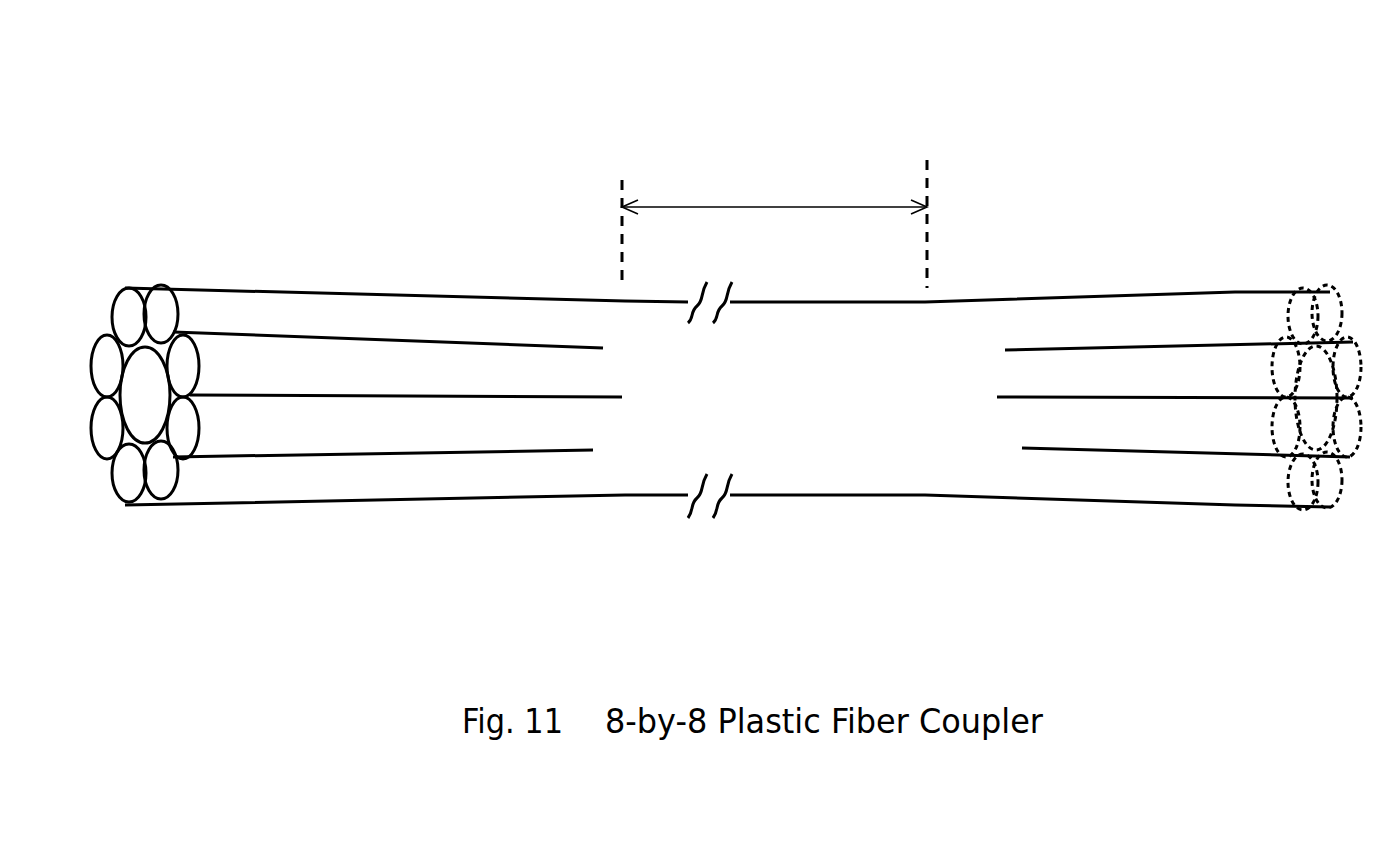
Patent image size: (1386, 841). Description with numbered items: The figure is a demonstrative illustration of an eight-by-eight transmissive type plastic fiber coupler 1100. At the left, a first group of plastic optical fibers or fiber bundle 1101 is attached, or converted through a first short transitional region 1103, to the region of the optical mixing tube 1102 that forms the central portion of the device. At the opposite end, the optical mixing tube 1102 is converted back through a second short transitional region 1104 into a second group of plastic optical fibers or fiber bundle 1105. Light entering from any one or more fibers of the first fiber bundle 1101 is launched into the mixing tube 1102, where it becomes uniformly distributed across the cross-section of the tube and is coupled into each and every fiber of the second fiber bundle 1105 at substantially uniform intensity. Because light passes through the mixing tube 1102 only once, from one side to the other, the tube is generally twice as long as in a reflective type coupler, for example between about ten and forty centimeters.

The 8-by-8 plastic fiber coupler 1100 is at (541, 112).
The first group of plastic optical fibers or fiber bundle 1101 is at (142, 285).
The optical mixing tube 1102 is at (817, 495).
The first short transitional region 1103 is at (598, 275).
The second short transitional region 1104 is at (1210, 277).
The second group of plastic optical fibers or fiber bundle 1105 is at (1297, 290).